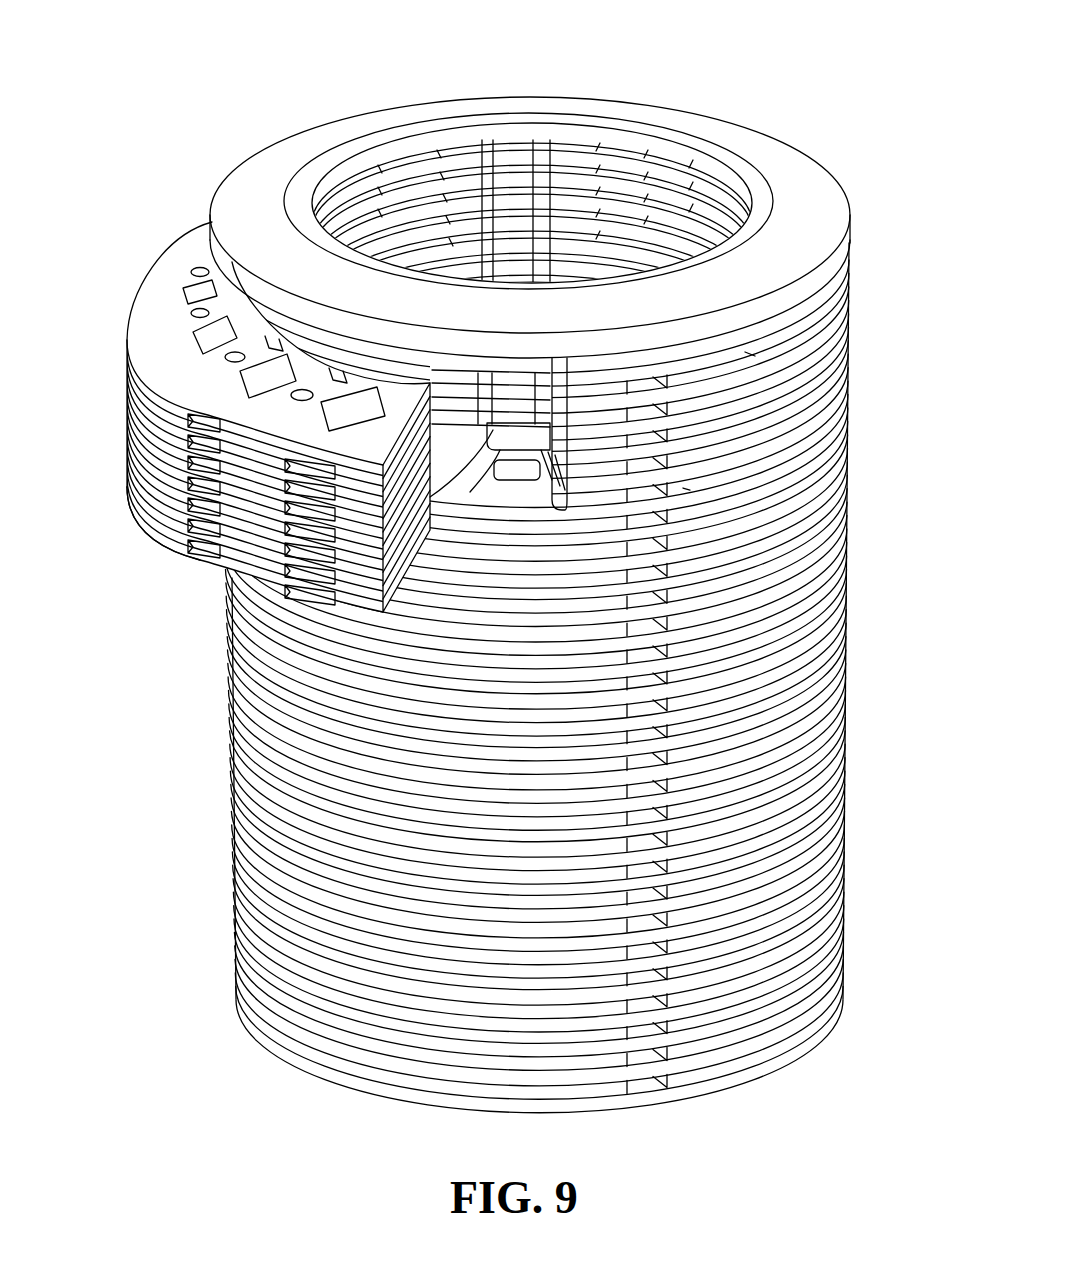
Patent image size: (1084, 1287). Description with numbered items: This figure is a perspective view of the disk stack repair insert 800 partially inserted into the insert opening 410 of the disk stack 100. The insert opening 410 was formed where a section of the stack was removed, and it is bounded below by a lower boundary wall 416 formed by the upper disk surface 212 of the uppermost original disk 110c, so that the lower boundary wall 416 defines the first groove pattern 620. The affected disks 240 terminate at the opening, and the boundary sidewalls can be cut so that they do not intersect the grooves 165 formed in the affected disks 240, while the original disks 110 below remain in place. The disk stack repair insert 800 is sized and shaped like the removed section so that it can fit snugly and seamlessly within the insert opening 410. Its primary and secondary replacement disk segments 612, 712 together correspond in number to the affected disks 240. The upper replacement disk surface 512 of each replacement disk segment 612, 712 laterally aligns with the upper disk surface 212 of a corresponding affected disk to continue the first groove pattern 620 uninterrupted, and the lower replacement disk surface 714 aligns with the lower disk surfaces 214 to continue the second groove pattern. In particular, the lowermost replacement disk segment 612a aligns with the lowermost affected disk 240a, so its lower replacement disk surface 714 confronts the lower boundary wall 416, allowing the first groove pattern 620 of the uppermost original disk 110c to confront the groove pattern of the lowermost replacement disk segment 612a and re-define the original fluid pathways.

The disk stack 100 is at (726, 70).
The original disks 110 is at (793, 746).
The uppermost original disk 110c is at (505, 502).
The grooves 165 is at (260, 330).
The upper disk surface 212 is at (742, 340).
The lower disk surfaces 214 is at (754, 364).
The affected disks 240 is at (860, 252).
The lowermost affected disk 240a is at (683, 488).
The insert opening 410 is at (262, 579).
The lower boundary wall 416 is at (473, 488).
The upper replacement disk surface 512 is at (200, 373).
The primary replacement disk segments 612 is at (158, 472).
The lowermost replacement disk segment 612a is at (235, 616).
The first groove pattern 620 is at (165, 301).
The secondary replacement disk segments 712 is at (137, 425).
The lower replacement disk surface 714 is at (166, 540).
The disk stack repair insert 800 is at (237, 417).